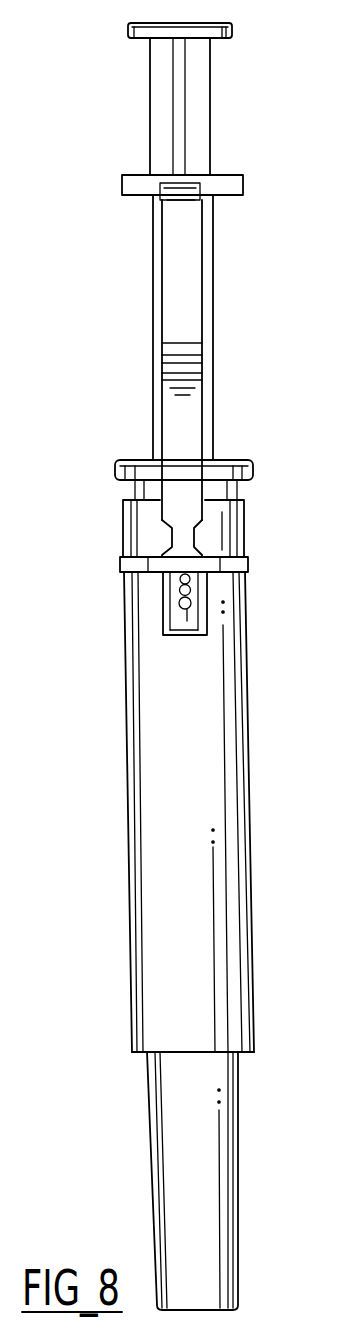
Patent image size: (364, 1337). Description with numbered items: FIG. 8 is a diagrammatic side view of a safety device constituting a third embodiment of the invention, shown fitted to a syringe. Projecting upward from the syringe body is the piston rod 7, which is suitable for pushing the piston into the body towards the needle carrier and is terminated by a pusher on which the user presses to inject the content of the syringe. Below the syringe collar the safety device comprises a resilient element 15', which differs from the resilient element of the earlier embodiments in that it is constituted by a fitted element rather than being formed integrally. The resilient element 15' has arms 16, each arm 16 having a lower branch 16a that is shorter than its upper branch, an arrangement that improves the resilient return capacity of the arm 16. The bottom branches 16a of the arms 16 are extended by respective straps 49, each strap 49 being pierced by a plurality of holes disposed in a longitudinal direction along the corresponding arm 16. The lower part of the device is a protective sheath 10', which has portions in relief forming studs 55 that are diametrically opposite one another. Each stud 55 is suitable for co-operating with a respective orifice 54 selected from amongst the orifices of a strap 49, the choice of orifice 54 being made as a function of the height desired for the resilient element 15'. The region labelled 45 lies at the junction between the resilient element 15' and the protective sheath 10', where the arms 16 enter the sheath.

The piston rod 7 is at (197, 138).
The resilient element 15' is at (199, 337).
The arm 16 is at (187, 323).
The lower branch 16a is at (187, 443).
The housing upper portion 45 is at (200, 537).
The strap 49 is at (197, 587).
The orifice 54 is at (187, 607).
The stud 55 is at (175, 590).
The protective sheath 10' is at (221, 933).